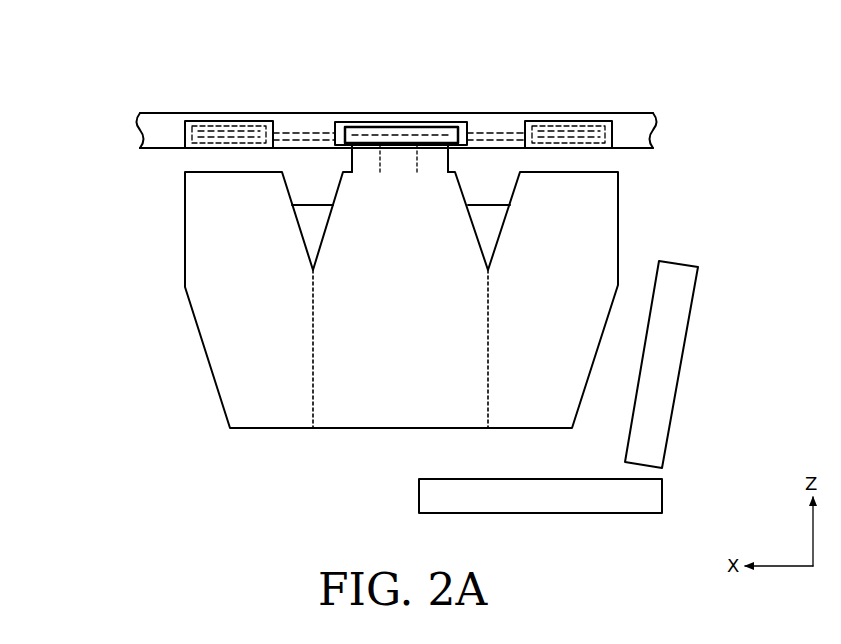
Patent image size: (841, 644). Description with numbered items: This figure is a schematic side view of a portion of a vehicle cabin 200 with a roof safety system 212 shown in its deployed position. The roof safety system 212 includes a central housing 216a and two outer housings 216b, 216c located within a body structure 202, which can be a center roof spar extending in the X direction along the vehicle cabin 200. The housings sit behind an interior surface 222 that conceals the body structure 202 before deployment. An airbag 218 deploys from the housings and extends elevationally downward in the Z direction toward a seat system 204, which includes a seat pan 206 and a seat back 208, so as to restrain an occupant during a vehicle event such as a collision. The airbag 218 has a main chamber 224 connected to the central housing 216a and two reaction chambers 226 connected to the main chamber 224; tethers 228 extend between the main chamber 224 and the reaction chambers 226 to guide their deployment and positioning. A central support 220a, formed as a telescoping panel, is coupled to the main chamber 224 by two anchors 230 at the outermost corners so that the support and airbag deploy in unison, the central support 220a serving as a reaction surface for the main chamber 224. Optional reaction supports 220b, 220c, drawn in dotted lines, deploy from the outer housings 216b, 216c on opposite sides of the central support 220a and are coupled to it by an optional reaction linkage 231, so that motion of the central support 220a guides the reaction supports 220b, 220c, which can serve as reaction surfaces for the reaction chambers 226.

The vehicle cabin 200 is at (691, 190).
The body structure 202 is at (638, 113).
The seat system 204 is at (702, 459).
The seat pan 206 is at (419, 491).
The seat back 208 is at (698, 268).
The roof safety system 212 is at (136, 44).
The central housing 216a is at (367, 122).
The outer housing 216b is at (196, 121).
The outer housing 216c is at (541, 121).
The airbag 218 is at (185, 290).
The central support 220a is at (442, 128).
The reaction support 220b is at (247, 127).
The reaction support 220c is at (598, 127).
The interior surface 222 is at (160, 150).
The main chamber 224 is at (400, 349).
The reaction chambers 226 is at (400, 350).
The tethers 228 is at (308, 207).
The anchors 230 is at (352, 168).
The reaction linkage 231 is at (301, 133).